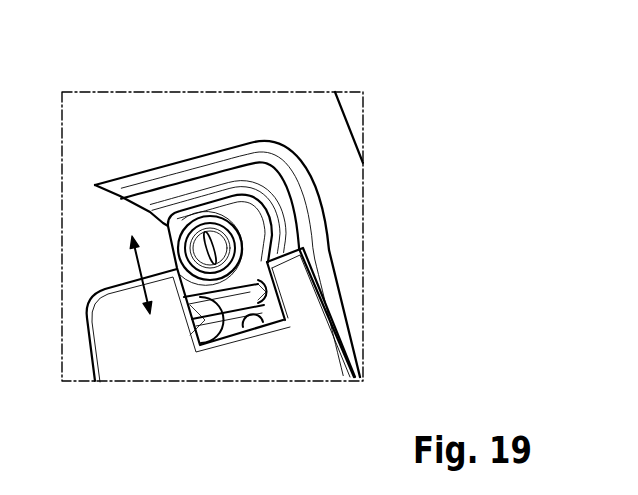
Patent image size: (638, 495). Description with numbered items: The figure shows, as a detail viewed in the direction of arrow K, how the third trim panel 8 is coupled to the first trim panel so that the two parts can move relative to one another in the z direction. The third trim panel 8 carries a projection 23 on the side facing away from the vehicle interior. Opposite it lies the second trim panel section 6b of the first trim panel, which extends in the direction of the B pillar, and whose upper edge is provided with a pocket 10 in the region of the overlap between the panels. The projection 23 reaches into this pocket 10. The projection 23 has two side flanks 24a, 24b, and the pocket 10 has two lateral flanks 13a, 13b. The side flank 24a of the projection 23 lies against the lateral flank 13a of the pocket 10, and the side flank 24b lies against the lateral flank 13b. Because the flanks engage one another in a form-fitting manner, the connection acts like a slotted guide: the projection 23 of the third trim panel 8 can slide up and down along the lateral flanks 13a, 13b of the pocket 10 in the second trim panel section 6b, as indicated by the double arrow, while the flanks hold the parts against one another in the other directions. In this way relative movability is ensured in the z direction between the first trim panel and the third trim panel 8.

The third trim panel 8 is at (148, 125).
The projection 23 is at (245, 217).
The second trim panel section 6b is at (320, 349).
The pocket 10 is at (268, 327).
The lateral flank 13b is at (376, 286).
The side flank 24b is at (270, 300).
The lateral flank 13a is at (193, 379).
The side flank 24a is at (215, 335).
The viewing direction K is at (395, 210).